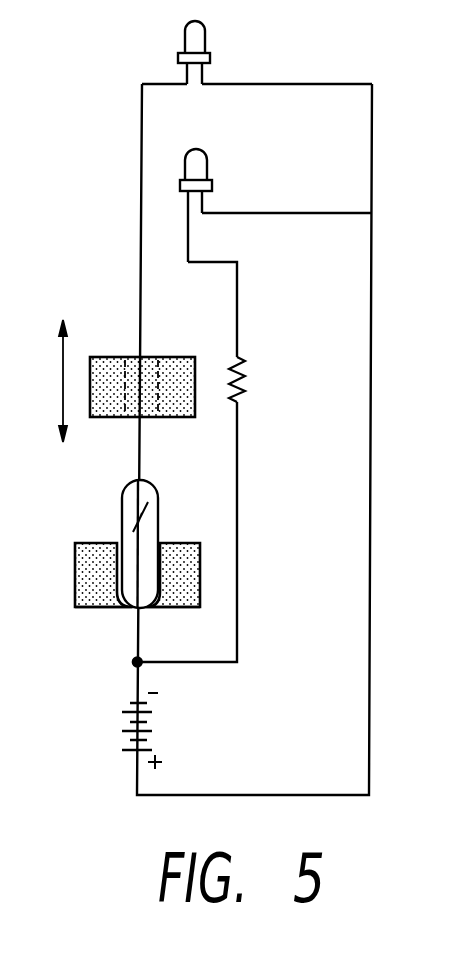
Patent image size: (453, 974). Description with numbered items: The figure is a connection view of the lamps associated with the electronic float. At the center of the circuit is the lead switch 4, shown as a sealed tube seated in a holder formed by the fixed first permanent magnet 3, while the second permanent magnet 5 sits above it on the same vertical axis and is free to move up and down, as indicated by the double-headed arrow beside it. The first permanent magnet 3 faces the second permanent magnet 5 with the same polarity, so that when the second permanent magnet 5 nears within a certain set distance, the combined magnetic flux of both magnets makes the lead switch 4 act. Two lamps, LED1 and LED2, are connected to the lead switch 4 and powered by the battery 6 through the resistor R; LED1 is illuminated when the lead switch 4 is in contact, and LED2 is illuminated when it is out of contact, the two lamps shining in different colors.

The first permanent magnet 3 is at (90, 543).
The lead switch 4 is at (148, 515).
The second permanent magnet 5 is at (110, 357).
The battery 6 is at (155, 733).
The resistor R is at (253, 379).
The lamp LED 1 LED1 is at (232, 44).
The lamp LED 2 LED2 is at (237, 197).